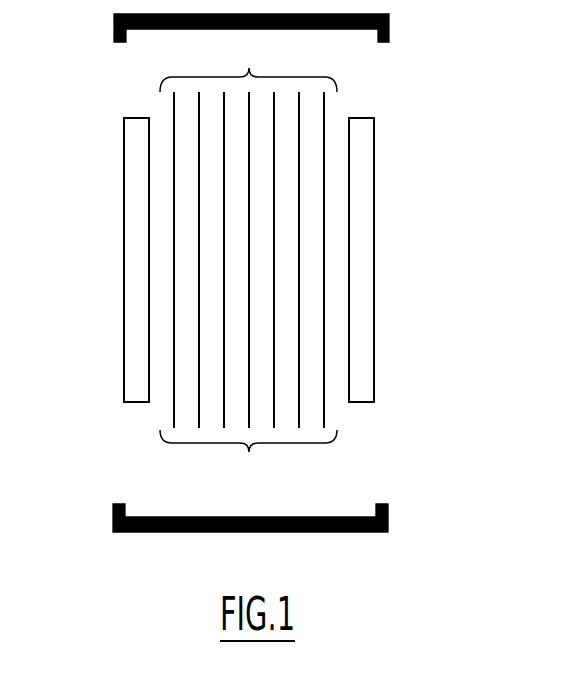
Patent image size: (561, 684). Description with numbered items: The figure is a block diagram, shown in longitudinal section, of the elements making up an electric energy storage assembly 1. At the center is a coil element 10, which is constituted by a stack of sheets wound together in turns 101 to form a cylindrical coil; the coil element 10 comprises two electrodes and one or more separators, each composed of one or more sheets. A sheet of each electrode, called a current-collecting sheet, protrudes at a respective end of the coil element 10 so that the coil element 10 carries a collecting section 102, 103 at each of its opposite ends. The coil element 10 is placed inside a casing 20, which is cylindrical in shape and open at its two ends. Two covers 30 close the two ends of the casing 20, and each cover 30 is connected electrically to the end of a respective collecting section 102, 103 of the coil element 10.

The storage assembly 1 is at (425, 68).
The coil element 10 is at (307, 260).
The turn 101 is at (325, 358).
The collecting section 102 is at (248, 67).
The collecting section 103 is at (248, 457).
The casing 20 is at (136, 303).
The cover 30 is at (114, 24).